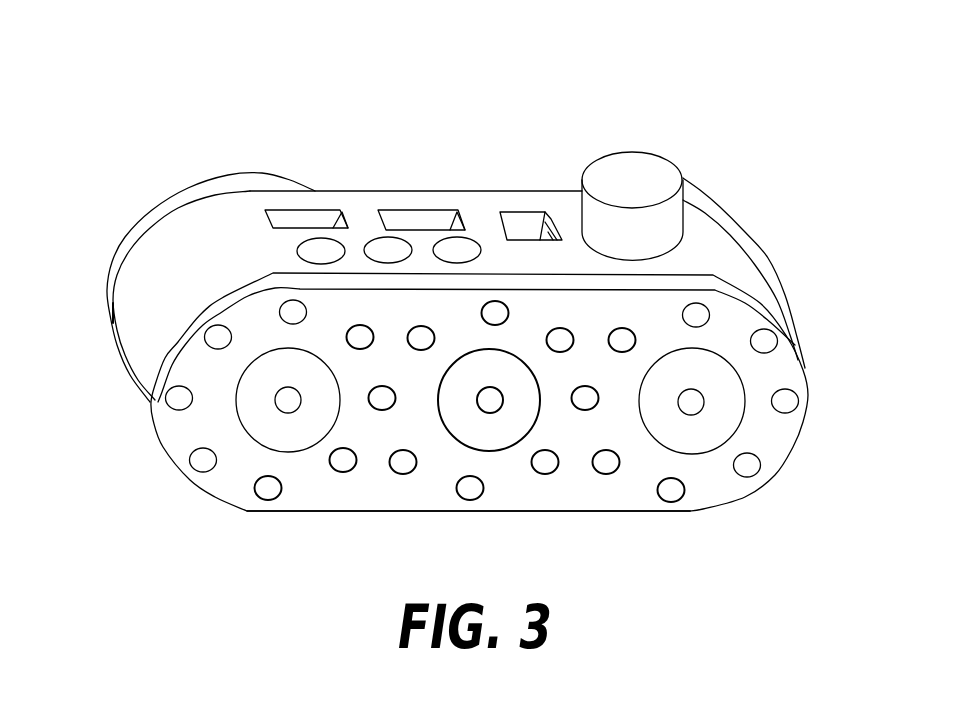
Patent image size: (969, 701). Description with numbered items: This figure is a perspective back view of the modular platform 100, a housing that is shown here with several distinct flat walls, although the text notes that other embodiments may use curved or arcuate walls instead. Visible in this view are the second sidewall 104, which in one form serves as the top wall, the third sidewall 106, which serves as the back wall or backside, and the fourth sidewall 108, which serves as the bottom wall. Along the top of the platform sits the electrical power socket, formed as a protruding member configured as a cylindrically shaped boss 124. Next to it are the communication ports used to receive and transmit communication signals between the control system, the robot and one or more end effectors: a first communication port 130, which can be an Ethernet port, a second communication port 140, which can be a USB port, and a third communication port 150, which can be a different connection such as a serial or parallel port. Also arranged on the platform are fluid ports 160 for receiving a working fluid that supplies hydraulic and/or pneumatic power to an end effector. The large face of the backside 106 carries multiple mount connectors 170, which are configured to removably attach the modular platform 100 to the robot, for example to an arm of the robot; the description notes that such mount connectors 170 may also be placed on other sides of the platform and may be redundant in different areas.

The modular platform 100 is at (730, 150).
The second sidewall 104 is at (712, 233).
The third sidewall 106 is at (710, 478).
The fourth sidewall 108 is at (300, 513).
The cylindrically shaped boss 124 is at (707, 188).
The first communication port 130 is at (532, 218).
The second communication port 140 is at (418, 222).
The third communication port 150 is at (297, 222).
The fluid ports 160 is at (373, 240).
The mount connectors 170 is at (250, 392).